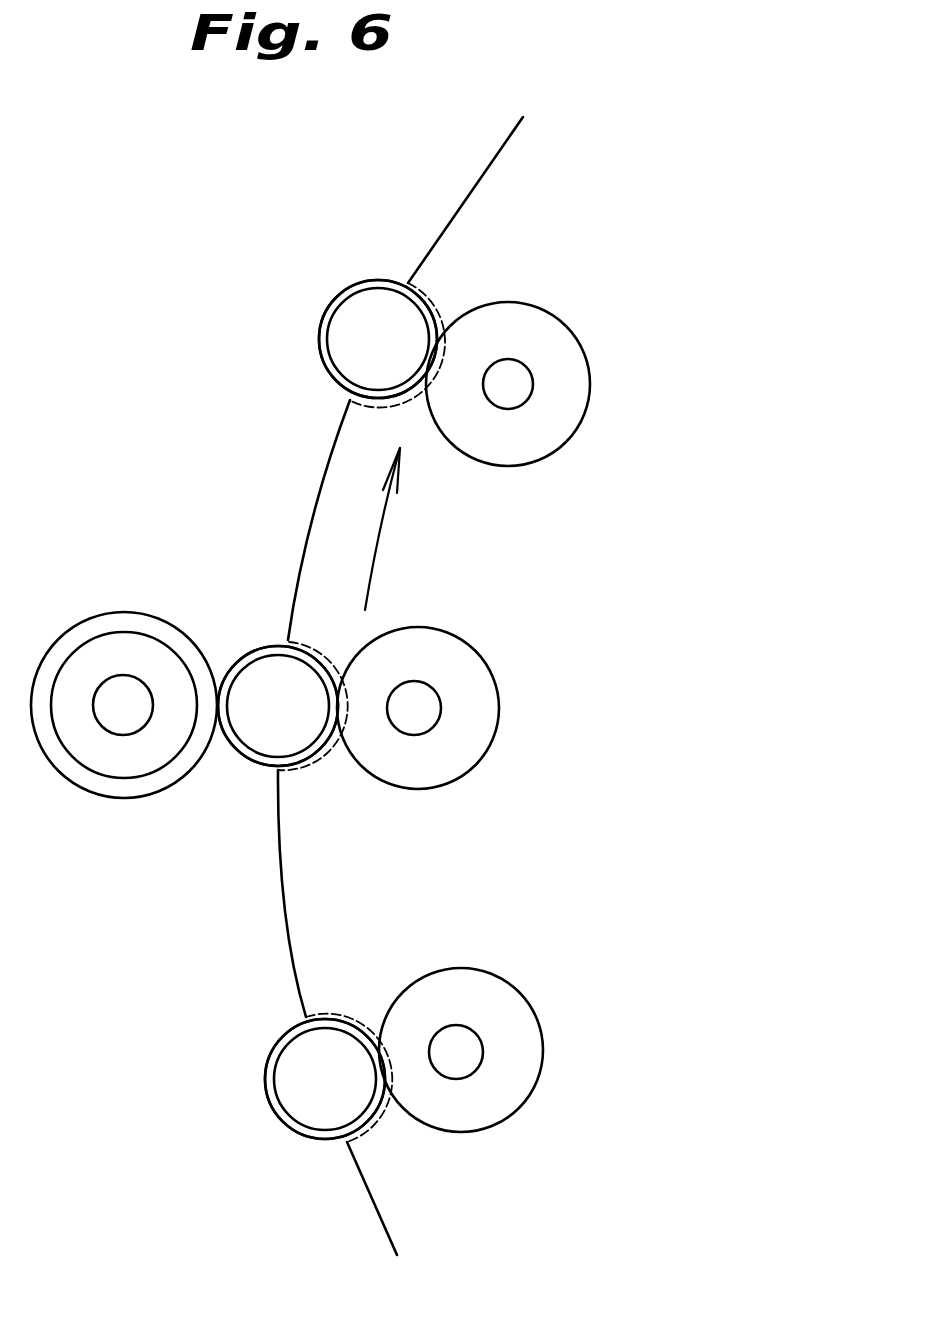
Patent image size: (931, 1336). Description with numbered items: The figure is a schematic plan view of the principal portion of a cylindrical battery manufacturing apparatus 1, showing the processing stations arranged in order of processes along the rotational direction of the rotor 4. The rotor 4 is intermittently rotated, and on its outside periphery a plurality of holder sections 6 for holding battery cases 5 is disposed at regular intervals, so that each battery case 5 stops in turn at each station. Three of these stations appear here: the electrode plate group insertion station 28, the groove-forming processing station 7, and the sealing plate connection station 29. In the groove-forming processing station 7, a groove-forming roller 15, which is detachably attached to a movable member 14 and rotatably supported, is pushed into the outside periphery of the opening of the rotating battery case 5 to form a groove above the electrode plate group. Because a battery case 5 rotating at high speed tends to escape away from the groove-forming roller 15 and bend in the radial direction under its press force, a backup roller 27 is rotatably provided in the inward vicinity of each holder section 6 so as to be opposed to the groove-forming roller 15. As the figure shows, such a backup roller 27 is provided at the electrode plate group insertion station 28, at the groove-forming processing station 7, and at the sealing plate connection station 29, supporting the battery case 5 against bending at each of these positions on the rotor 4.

The manufacturing apparatus 1 is at (280, 502).
The rotor 4 is at (290, 852).
The battery case 5 is at (322, 333).
The holder section 6 is at (430, 325).
The groove-forming processing station 7 is at (250, 638).
The movable member 14 is at (110, 713).
The groove-forming roller 15 is at (102, 627).
The backup roller 27 is at (535, 425).
The electrode plate group insertion station 28 is at (272, 1028).
The sealing plate connection station 29 is at (347, 276).